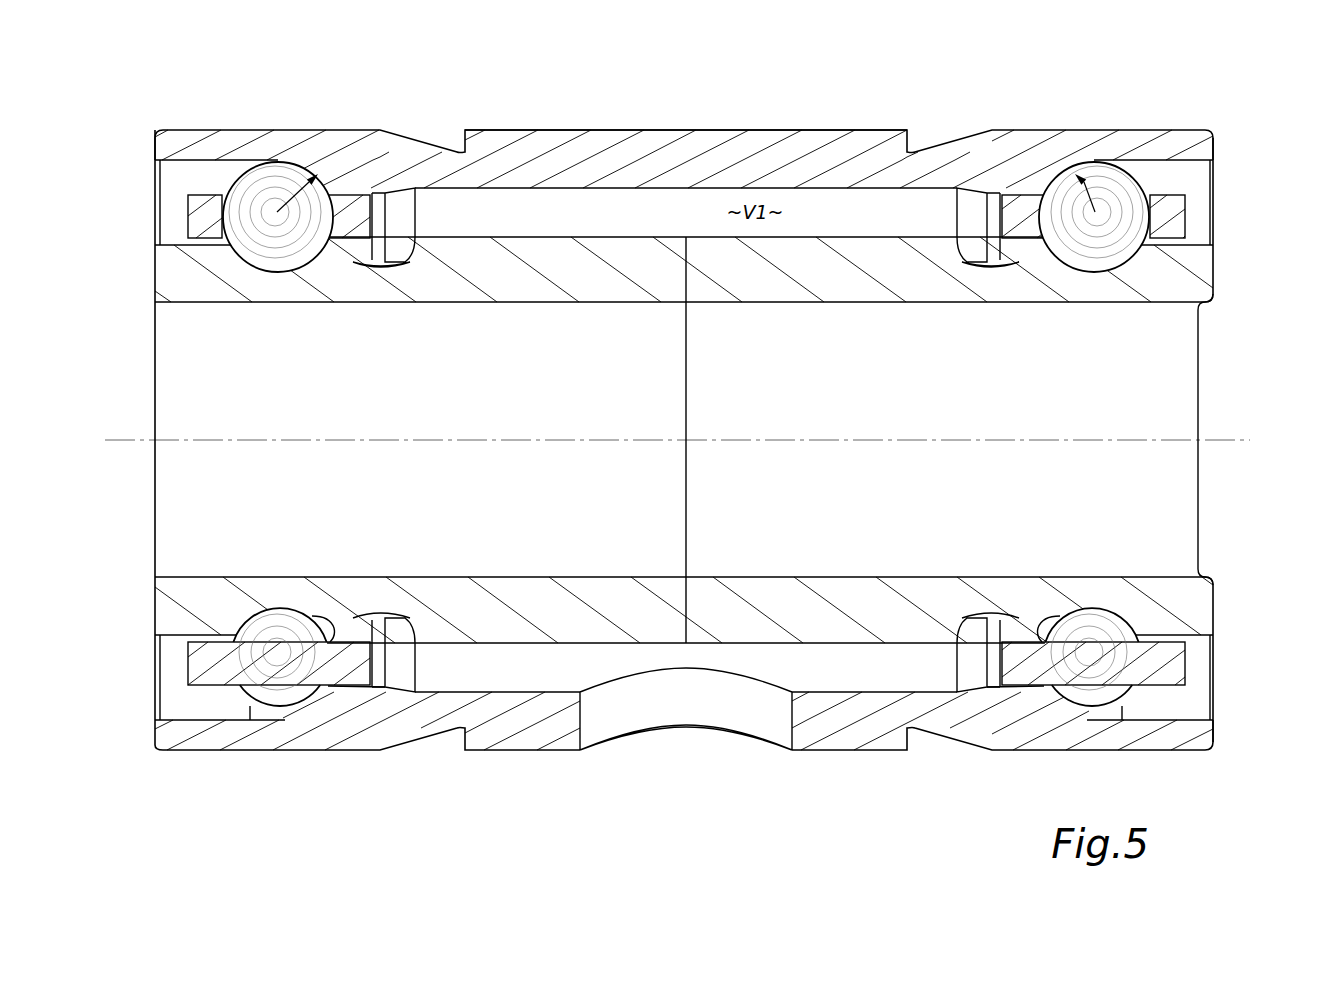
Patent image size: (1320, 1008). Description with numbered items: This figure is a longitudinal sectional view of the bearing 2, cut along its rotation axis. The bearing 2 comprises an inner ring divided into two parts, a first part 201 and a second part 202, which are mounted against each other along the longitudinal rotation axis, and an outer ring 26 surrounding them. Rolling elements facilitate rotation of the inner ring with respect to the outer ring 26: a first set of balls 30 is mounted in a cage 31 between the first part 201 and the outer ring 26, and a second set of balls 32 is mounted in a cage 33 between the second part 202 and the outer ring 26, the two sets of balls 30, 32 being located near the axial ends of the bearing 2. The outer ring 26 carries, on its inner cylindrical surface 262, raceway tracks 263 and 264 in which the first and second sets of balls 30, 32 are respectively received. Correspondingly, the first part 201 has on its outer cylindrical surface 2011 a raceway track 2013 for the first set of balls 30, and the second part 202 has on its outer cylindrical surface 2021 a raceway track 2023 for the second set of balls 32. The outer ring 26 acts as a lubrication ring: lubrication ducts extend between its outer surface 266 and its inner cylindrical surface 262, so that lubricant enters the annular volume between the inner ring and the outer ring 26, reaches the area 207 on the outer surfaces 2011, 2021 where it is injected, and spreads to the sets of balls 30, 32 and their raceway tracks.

The bearing 2 is at (1190, 95).
The outer ring 26 is at (1013, 153).
The inner cylindrical surface 262 is at (605, 195).
The raceway track 263 is at (277, 212).
The raceway track 264 is at (1095, 212).
The outer surface 266 is at (746, 120).
The area where lubricant is injected 207 is at (412, 224).
The first part of inner ring 201 is at (173, 270).
The second part of inner ring 202 is at (1178, 292).
The outer cylindrical surface 2011 is at (508, 230).
The outer cylindrical surface 2021 is at (812, 222).
The raceway track 2013 is at (287, 260).
The raceway track 2023 is at (1098, 260).
The cage 31 is at (200, 208).
The cage 33 is at (1176, 230).
The first set of balls 30 is at (285, 690).
The second set of balls 32 is at (1117, 692).